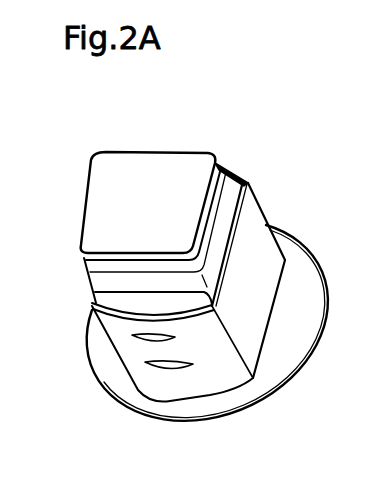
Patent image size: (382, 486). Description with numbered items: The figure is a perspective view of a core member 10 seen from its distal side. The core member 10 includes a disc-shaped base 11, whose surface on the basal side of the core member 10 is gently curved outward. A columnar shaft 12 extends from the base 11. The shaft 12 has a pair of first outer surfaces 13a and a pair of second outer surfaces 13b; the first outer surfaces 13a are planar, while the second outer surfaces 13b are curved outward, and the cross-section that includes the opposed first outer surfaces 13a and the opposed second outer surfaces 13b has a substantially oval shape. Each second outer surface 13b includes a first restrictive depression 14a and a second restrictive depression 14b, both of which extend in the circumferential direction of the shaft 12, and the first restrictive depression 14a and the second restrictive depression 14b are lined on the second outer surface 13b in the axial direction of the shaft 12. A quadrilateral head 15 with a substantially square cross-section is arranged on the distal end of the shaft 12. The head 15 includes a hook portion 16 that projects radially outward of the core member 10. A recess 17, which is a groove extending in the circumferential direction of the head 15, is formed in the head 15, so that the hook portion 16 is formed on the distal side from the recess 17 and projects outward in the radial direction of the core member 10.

The core member 10 is at (310, 147).
The base 11 is at (329, 315).
The shaft 12 is at (262, 206).
The first outer surfaces 13a is at (273, 305).
The second outer surfaces 13b is at (155, 388).
The first restrictive depression 14a is at (176, 338).
The second restrictive depression 14b is at (194, 365).
The head 15 is at (90, 203).
The hook portion 16 is at (222, 164).
The recess 17 is at (86, 263).